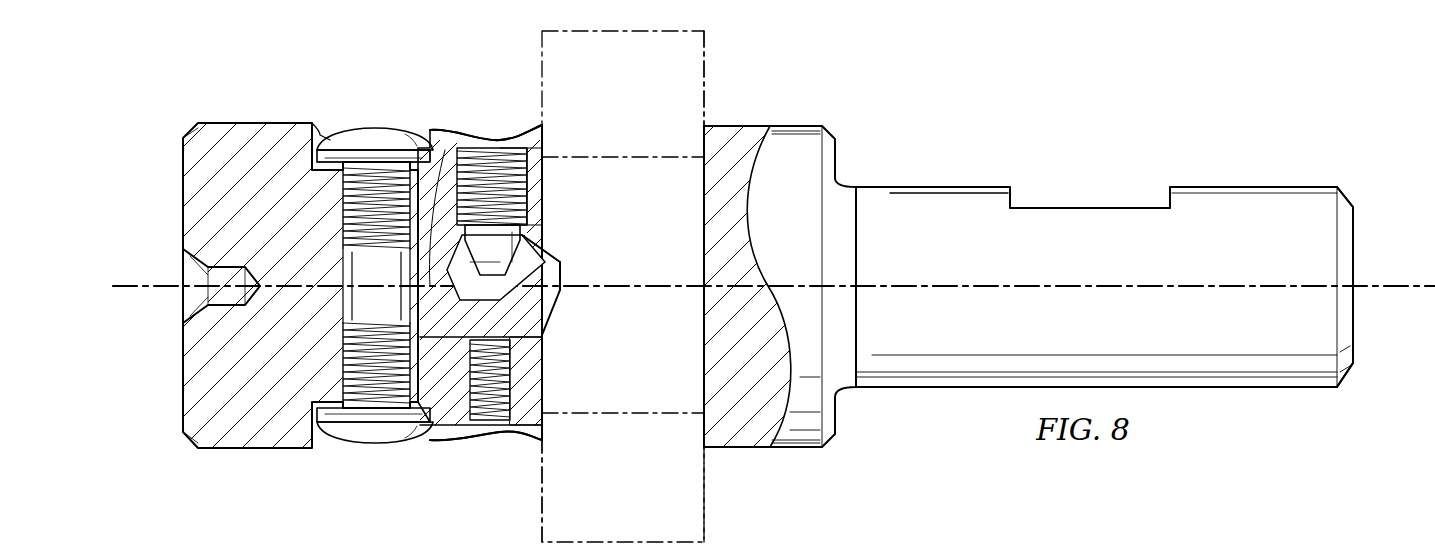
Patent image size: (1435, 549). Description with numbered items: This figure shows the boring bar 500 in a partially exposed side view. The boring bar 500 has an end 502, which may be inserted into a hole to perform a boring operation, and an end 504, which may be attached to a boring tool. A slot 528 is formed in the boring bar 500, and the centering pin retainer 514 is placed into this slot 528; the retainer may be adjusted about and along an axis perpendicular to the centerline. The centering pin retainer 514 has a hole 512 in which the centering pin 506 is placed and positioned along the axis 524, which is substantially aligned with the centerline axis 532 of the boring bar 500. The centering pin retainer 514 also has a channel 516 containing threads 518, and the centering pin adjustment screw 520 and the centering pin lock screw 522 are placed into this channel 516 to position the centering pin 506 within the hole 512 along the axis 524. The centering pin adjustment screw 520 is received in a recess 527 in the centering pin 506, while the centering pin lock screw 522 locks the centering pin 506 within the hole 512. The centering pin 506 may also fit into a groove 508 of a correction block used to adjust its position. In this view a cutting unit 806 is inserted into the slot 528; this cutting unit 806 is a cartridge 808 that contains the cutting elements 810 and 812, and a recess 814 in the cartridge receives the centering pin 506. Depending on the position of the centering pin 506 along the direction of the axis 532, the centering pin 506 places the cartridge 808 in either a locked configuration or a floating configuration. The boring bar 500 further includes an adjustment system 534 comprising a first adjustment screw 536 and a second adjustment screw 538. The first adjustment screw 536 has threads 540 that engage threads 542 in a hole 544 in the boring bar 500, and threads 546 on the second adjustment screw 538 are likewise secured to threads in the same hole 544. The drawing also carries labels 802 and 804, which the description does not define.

The boring bar 500 is at (1003, 160).
The end 502 is at (183, 394).
The end 504 is at (1353, 259).
The centering pin 506 is at (548, 352).
The groove 508 is at (566, 275).
The hole 512 is at (420, 298).
The centering pin retainer 514 is at (530, 138).
The channel 516 is at (464, 170).
The threads 518 is at (538, 175).
The centering pin adjustment screw 520 is at (504, 148).
The centering pin lock screw 522 is at (488, 402).
The axis 524 is at (980, 283).
The recess 527 is at (460, 200).
The slot 528 is at (704, 217).
The axis 532 is at (138, 284).
The adjustment system 534 is at (405, 114).
The first adjustment screw 536 is at (332, 134).
The second adjustment screw 538 is at (405, 445).
The threads 540 is at (343, 200).
The threads 542 is at (374, 150).
The hole 544 is at (314, 126).
The threads 546 is at (340, 425).
The notch 802 is at (948, 187).
The shaft bottom 804 is at (949, 387).
The cutting unit 806 is at (708, 60).
The cartridge 808 is at (542, 515).
The cutting element 810 is at (688, 98).
The cutting element 812 is at (688, 475).
The recess 814 is at (568, 297).